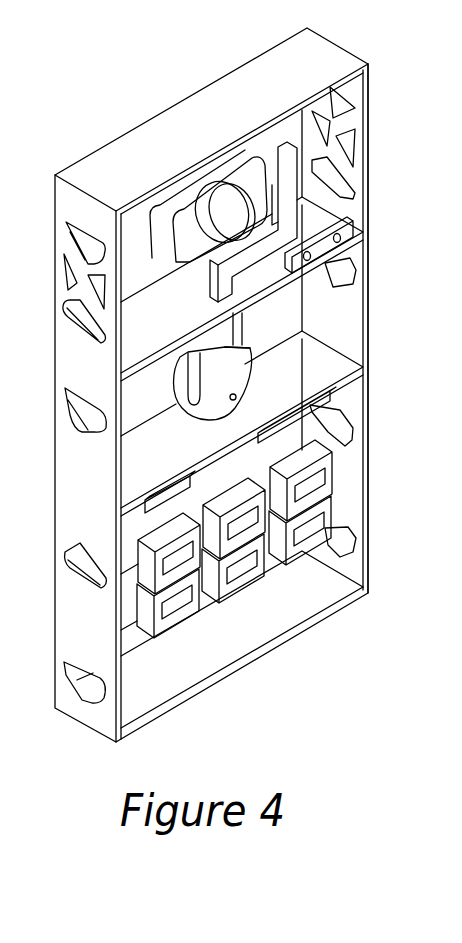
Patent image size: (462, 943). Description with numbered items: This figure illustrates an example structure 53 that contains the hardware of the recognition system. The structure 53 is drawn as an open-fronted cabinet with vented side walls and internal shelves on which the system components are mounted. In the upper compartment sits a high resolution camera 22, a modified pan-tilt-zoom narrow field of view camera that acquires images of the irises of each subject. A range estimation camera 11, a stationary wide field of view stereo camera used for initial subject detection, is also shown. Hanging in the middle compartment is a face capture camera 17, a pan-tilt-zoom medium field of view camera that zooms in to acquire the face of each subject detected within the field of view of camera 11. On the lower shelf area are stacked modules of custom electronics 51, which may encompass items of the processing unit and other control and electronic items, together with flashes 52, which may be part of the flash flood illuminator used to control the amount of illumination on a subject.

The structure 53 is at (352, 62).
The range estimation camera 11 is at (379, 222).
The high resolution camera 22 is at (318, 202).
The face capture camera 17 is at (277, 367).
The custom electronics 51 is at (300, 445).
The flashes 52 is at (330, 522).